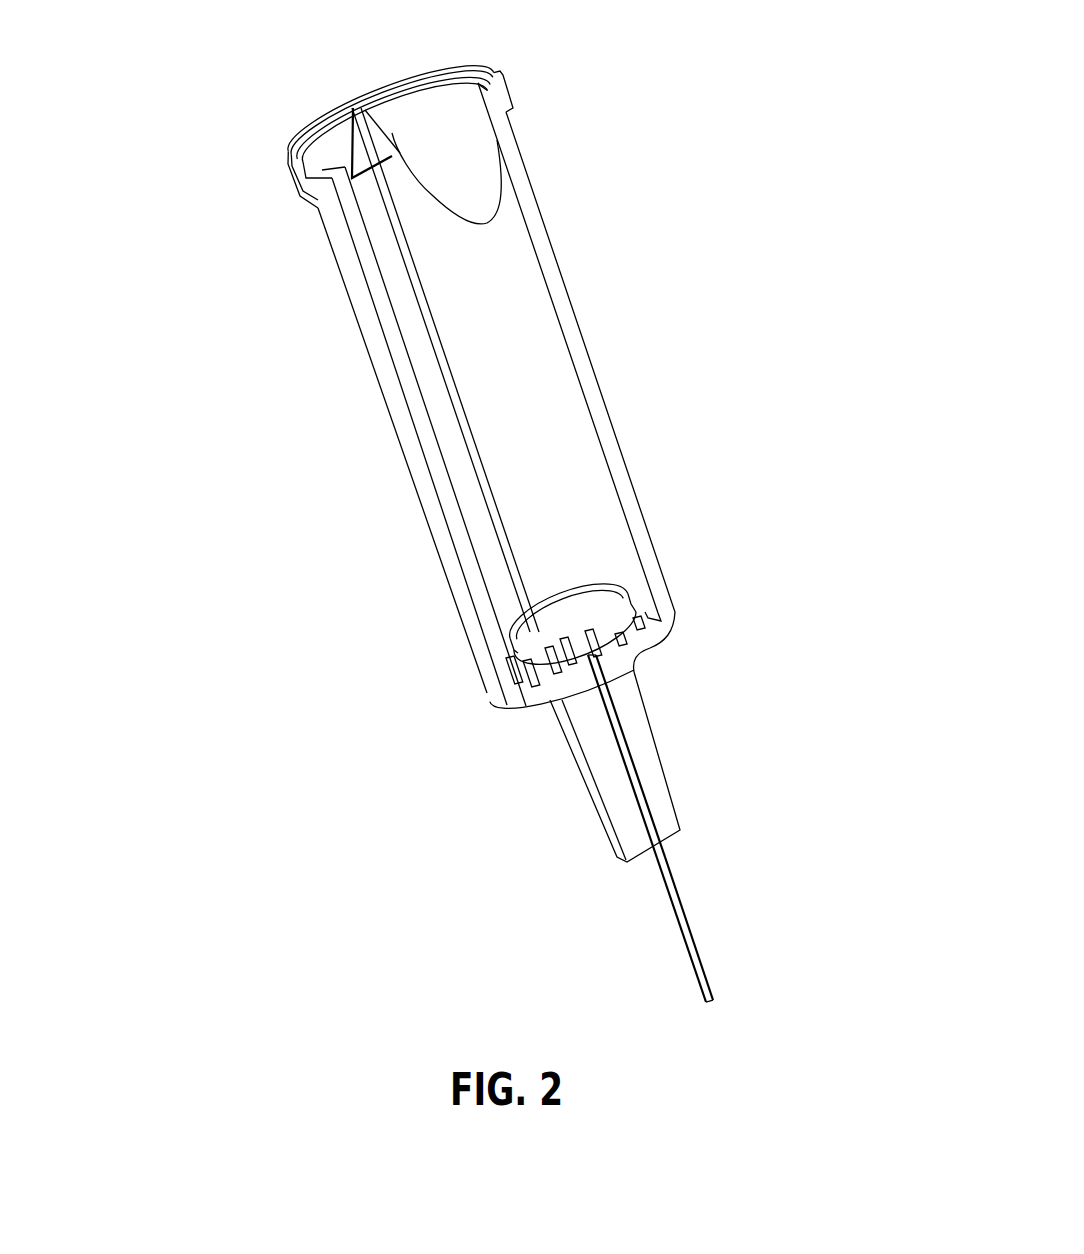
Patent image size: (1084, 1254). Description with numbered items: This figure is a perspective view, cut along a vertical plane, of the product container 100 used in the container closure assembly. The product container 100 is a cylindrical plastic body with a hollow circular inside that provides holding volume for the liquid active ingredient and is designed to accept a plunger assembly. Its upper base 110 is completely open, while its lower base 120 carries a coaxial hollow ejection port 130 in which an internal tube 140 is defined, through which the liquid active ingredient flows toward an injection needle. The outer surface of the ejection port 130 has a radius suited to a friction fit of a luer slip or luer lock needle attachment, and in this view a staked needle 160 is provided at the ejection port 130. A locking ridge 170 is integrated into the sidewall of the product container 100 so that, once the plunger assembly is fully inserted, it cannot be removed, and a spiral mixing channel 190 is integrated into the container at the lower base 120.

The product container 100 is at (333, 240).
The upper base 110 is at (497, 73).
The lower base 120 is at (665, 628).
The ejection port 130 is at (617, 690).
The internal tube 140 is at (628, 767).
The staked needle 160 is at (682, 908).
The locking ridge 170 is at (395, 134).
The spiral mixing channel 190 is at (552, 652).